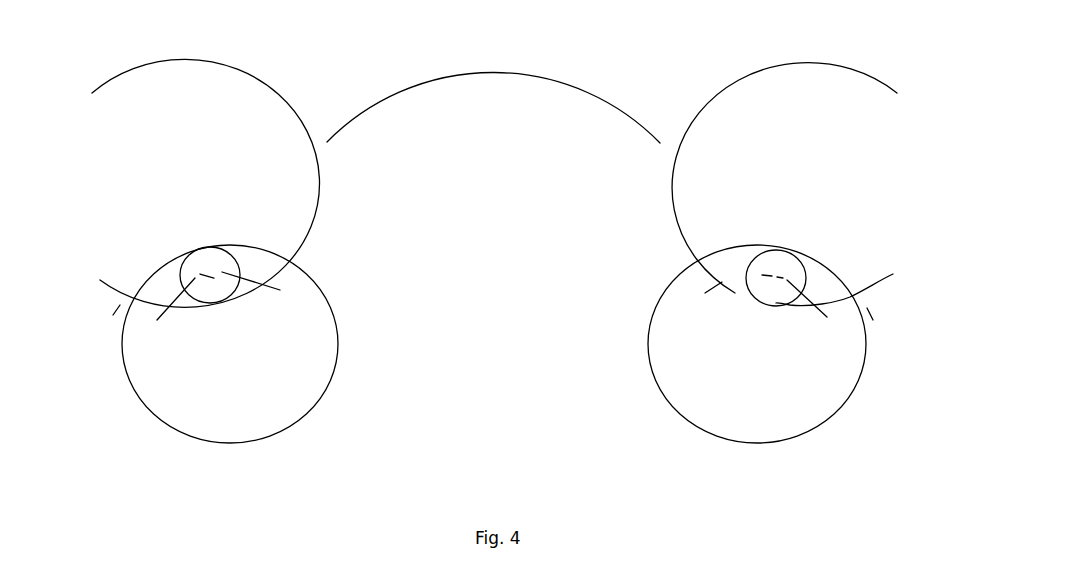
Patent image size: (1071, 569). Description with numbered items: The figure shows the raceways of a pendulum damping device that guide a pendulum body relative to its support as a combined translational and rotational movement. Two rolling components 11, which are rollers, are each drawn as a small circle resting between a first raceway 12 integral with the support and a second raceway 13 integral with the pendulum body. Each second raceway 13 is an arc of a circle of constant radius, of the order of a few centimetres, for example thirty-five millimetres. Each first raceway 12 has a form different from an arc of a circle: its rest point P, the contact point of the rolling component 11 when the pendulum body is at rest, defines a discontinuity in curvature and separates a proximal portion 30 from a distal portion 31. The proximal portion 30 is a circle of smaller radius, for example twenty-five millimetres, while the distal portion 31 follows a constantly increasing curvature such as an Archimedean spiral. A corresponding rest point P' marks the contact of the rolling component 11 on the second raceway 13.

The rolling component 11 is at (222, 258).
The first raceway 12 is at (843, 178).
The second raceway 13 is at (174, 305).
The proximal portion 30 is at (250, 253).
The distal portion 31 is at (140, 285).
The rest point P is at (482, 231).
The rest point P' is at (300, 307).